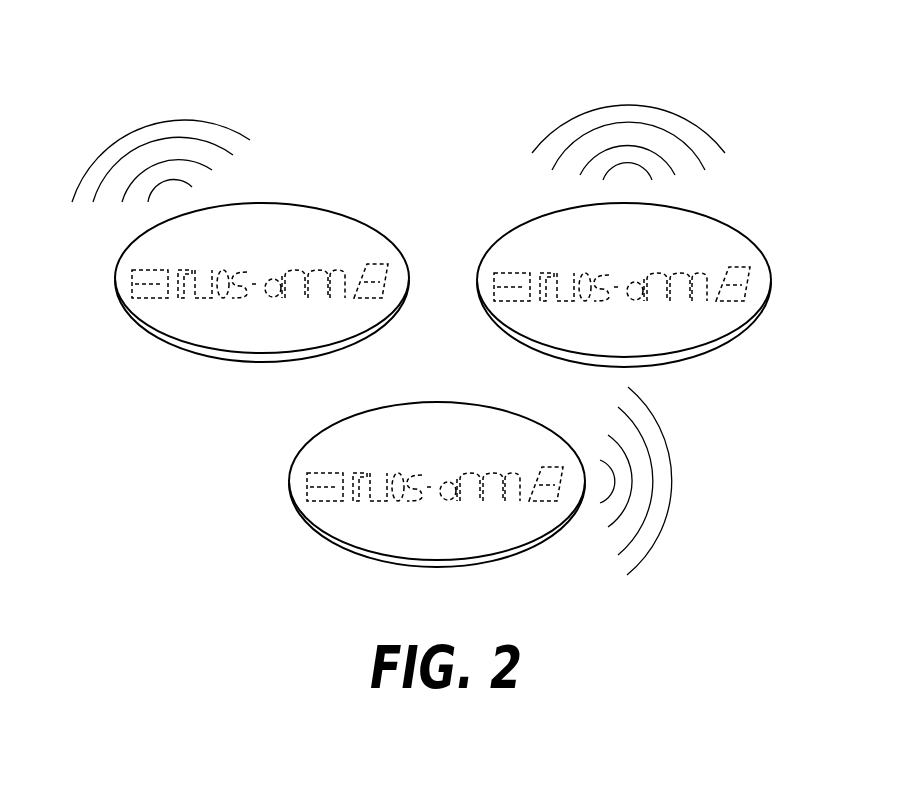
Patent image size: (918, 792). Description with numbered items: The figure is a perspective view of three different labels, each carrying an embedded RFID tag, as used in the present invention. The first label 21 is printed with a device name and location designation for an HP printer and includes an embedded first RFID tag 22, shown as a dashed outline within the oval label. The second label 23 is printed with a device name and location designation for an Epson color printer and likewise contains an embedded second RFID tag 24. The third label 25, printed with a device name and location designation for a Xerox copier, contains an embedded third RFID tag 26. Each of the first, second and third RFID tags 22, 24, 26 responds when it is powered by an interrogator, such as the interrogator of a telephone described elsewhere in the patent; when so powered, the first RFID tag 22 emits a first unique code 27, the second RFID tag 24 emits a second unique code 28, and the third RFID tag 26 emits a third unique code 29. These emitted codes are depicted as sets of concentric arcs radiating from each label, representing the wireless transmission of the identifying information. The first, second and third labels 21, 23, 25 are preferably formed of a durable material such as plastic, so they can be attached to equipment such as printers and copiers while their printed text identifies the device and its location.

The first label 21 is at (363, 213).
The first RFID tag 22 is at (178, 304).
The second label 23 is at (712, 215).
The second RFID tag 24 is at (706, 316).
The third label 25 is at (588, 466).
The third RFID tag 26 is at (435, 460).
The first unique code 27 is at (121, 138).
The second unique code 28 is at (628, 105).
The third unique code 29 is at (672, 473).